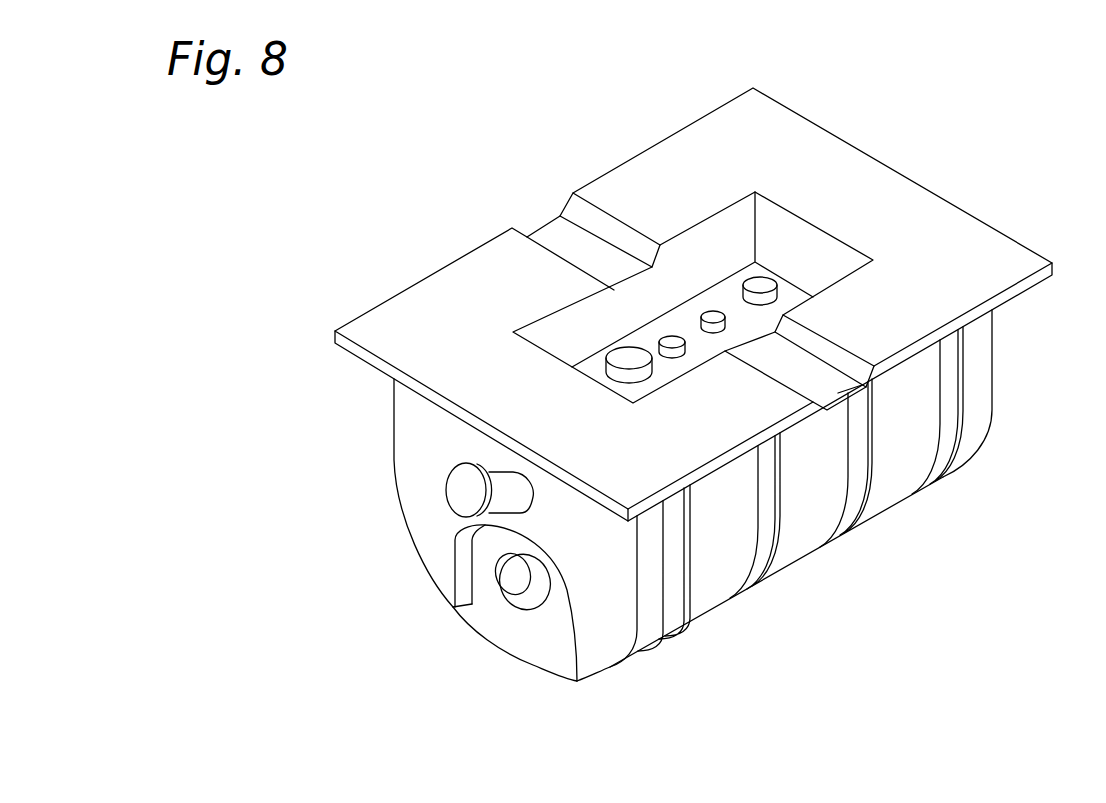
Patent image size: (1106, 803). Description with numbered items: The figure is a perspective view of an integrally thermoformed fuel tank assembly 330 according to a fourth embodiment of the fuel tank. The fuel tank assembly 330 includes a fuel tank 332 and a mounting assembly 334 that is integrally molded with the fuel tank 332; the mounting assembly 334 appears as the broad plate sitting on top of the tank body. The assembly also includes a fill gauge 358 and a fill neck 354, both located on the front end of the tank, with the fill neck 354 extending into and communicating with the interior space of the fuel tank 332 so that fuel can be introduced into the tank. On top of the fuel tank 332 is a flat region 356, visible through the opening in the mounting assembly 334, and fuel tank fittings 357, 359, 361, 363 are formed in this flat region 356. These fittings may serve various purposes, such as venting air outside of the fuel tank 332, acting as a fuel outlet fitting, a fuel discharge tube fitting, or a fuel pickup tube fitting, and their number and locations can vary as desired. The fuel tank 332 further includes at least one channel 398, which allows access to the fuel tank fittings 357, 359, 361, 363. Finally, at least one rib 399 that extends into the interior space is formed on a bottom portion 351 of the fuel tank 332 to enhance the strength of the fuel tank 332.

The fuel tank assembly 330 is at (868, 652).
The fuel tank 332 is at (531, 658).
The mounting assembly 334 is at (973, 212).
The bottom portion 351 is at (697, 598).
The fill neck 354 is at (500, 473).
The flat region 356 is at (733, 292).
The fuel tank fitting 357 is at (630, 356).
The fill gauge 358 is at (516, 586).
The fuel tank fitting 359 is at (672, 338).
The fuel tank fitting 361 is at (713, 314).
The fuel tank fitting 363 is at (760, 283).
The channel 398 is at (874, 388).
The rib 399 is at (862, 507).